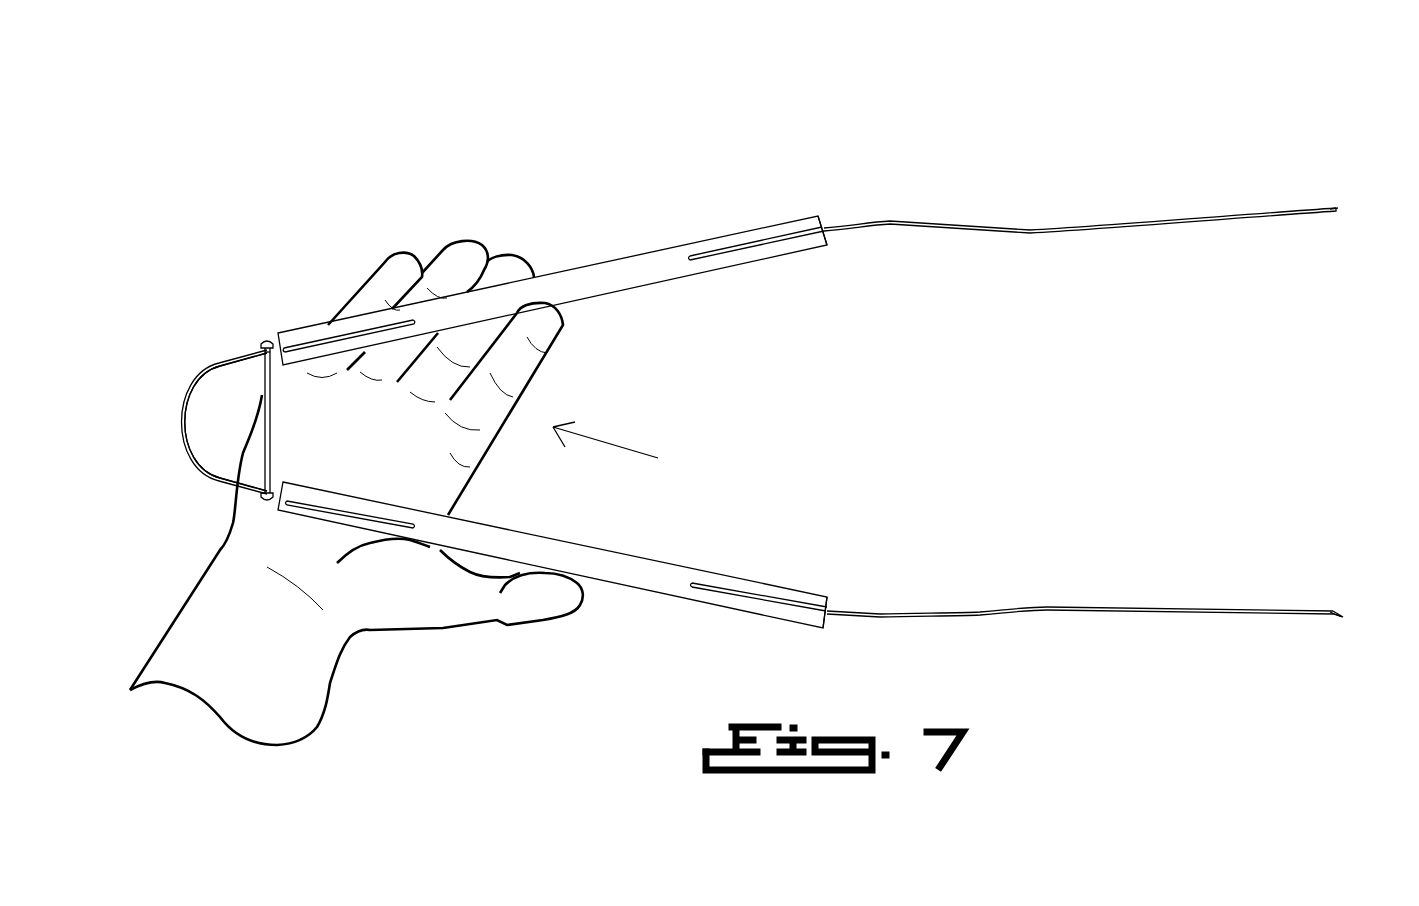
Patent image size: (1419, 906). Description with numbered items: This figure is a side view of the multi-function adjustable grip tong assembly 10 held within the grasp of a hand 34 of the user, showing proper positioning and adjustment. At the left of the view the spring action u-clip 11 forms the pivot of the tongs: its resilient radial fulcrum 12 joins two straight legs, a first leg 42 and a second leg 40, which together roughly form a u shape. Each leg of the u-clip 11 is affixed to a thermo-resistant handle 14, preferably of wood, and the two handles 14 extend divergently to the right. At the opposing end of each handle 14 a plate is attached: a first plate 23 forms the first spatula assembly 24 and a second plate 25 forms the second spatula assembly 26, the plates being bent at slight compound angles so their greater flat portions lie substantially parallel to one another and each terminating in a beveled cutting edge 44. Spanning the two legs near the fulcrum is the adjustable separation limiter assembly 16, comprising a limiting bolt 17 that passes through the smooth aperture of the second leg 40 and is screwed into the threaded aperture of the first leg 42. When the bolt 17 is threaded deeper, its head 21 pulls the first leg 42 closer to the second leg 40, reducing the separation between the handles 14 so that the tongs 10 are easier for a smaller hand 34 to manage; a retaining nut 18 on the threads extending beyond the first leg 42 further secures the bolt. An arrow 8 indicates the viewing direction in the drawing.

The direction arrow 8 is at (617, 449).
The multi-function adjustable grip barbeque tong assembly 10 is at (1016, 150).
The spring action u-clip 11 is at (181, 422).
The radial fulcrum 12 is at (199, 380).
The thermo-resistant handle 14 is at (607, 280).
The separation limiter assembly 16 is at (281, 437).
The limiting bolt 17 is at (263, 385).
The nut 18 is at (262, 342).
The head of limiting bolt 21 is at (268, 503).
The first plate 23 is at (1130, 222).
The first spatula assembly 24 is at (758, 222).
The second plate 25 is at (1055, 608).
The second spatula assembly 26 is at (742, 572).
The hand of user 34 is at (450, 460).
The second leg of u-clip 40 is at (327, 511).
The first leg of u-clip 42 is at (308, 328).
The beveled cutting edge 44 is at (1337, 209).